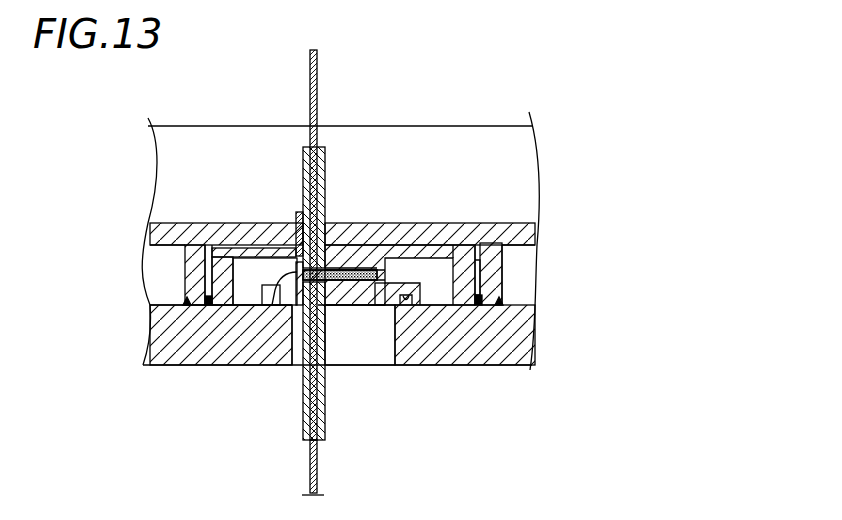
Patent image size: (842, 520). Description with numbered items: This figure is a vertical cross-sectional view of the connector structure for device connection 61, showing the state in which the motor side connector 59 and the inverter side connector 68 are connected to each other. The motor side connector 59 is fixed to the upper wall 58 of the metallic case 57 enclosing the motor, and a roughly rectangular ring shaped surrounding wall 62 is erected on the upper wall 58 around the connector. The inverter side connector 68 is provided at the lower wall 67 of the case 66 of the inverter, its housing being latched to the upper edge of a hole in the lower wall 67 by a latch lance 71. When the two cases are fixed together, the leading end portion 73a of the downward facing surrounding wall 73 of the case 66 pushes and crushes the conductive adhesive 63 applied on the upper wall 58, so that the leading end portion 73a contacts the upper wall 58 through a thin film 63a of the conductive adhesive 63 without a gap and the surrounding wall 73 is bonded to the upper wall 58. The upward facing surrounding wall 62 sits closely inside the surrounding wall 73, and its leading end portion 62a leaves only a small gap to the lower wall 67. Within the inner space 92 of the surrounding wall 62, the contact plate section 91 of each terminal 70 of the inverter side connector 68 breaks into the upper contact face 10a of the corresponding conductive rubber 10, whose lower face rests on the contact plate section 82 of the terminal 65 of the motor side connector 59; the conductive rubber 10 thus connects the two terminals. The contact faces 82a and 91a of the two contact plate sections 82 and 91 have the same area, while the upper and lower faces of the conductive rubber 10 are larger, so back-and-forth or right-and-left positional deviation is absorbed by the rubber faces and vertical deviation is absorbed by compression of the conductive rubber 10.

The connector structure for device connection 61 is at (573, 141).
The case 66 is at (470, 127).
The lower wall 67 is at (428, 226).
The inverter side connector 68 is at (329, 204).
The terminal 70 is at (319, 96).
The latch lance 71 is at (298, 234).
The contact face 10a is at (290, 258).
The conductive rubber 10 is at (287, 318).
The conductive adhesive 63 is at (207, 308).
The thin film 63a is at (183, 300).
The surrounding wall 62 is at (442, 274).
The leading end portion 62a is at (479, 245).
The inner space 92 is at (483, 262).
The surrounding wall 73 is at (495, 280).
The leading end portion 73a is at (500, 304).
The contact plate section 91 is at (385, 252).
The contact face 91a is at (351, 250).
The contact plate section 82 is at (350, 307).
The contact face 82a is at (373, 307).
The motor side connector 59 is at (330, 343).
The case 57 is at (428, 366).
The upper wall 58 is at (497, 367).
The terminal 65 is at (318, 455).